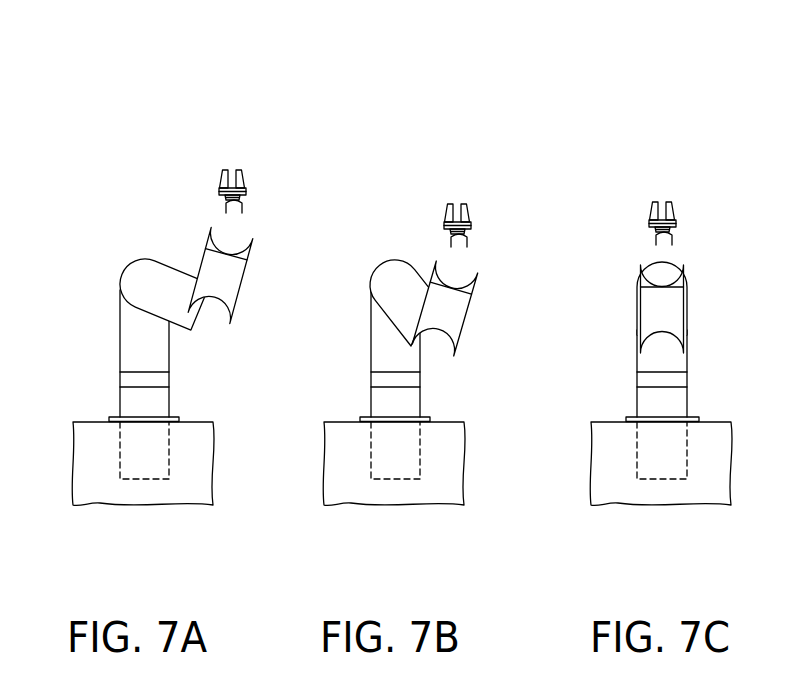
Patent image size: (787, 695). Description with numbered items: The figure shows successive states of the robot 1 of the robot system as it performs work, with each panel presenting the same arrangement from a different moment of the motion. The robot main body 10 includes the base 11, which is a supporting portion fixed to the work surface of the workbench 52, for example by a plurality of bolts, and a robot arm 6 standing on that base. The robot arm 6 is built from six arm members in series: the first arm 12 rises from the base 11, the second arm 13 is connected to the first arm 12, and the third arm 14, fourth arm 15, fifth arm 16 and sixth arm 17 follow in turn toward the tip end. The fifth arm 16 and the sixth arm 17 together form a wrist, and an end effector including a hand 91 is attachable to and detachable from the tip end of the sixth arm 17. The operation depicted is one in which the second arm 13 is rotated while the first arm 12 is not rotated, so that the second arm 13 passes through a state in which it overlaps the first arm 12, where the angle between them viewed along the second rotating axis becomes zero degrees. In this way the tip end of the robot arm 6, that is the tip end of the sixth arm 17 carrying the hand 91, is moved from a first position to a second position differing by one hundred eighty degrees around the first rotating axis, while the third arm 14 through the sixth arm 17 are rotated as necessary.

In FIG. 7A, the robot 1 is at (265, 85).
In FIG. 7B, the robot 1 is at (483, 86).
In FIG. 7C, the robot 1 is at (706, 86).
In FIG. 7A, the robot main body 10 is at (272, 132).
In FIG. 7B, the robot main body 10 is at (500, 135).
In FIG. 7C, the robot main body 10 is at (723, 135).
In FIG. 7A, the base 11 is at (158, 451).
In FIG. 7B, the base 11 is at (408, 450).
In FIG. 7C, the base 11 is at (675, 450).
In FIG. 7A, the first arm 12 is at (130, 402).
In FIG. 7B, the first arm 12 is at (381, 402).
In FIG. 7C, the first arm 12 is at (675, 404).
In FIG. 7A, the robot arm 6 is at (160, 360).
In FIG. 7B, the robot arm 6 is at (410, 379).
In FIG. 7C, the robot arm 6 is at (675, 379).
In FIG. 7A, the second arm 13 is at (155, 275).
In FIG. 7B, the second arm 13 is at (398, 277).
In FIG. 7A, the third arm 14 is at (222, 320).
In FIG. 7B, the third arm 14 is at (445, 348).
In FIG. 7C, the third arm 14 is at (670, 338).
In FIG. 7A, the fourth arm 15 is at (242, 247).
In FIG. 7B, the fourth arm 15 is at (467, 277).
In FIG. 7C, the fourth arm 15 is at (670, 270).
In FIG. 7A, the fifth arm 16 is at (242, 212).
In FIG. 7B, the fifth arm 16 is at (470, 240).
In FIG. 7C, the fifth arm 16 is at (670, 238).
In FIG. 7A, the sixth arm 17 is at (240, 197).
In FIG. 7B, the sixth arm 17 is at (470, 225).
In FIG. 7C, the sixth arm 17 is at (672, 225).
In FIG. 7A, the hand 91 is at (247, 175).
In FIG. 7B, the hand 91 is at (470, 210).
In FIG. 7C, the hand 91 is at (672, 210).
In FIG. 7A, the workbench 52 is at (83, 465).
In FIG. 7B, the workbench 52 is at (333, 465).
In FIG. 7C, the workbench 52 is at (600, 465).